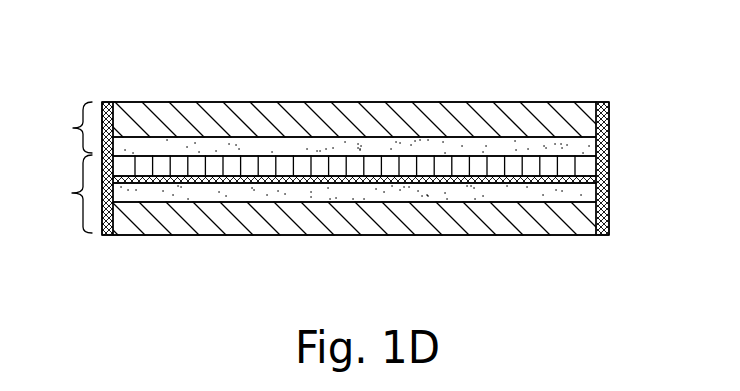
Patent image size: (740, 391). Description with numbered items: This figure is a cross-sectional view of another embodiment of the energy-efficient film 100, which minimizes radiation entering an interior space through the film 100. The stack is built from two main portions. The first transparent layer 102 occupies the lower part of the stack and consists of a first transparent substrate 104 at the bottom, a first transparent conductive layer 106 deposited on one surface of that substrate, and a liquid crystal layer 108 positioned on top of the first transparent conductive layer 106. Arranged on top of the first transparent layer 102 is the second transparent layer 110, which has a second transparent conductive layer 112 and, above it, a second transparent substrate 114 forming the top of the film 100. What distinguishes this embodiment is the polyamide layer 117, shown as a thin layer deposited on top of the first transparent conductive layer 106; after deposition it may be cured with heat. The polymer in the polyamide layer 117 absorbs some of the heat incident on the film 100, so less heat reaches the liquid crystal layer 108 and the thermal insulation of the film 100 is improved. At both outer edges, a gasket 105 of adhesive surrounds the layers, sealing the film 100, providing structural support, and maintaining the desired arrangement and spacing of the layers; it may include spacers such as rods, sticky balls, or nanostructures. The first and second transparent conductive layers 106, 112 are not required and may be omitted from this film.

The energy-efficient film 100 is at (490, 46).
The first transparent layer 102 is at (59, 194).
The first transparent substrate 104 is at (597, 231).
The gasket 105 is at (103, 102).
The first transparent conductive layer 106 is at (585, 197).
The liquid crystal layer 108 is at (586, 170).
The second transparent layer 110 is at (60, 127).
The second transparent conductive layer 112 is at (594, 145).
The second transparent substrate 114 is at (592, 127).
The polyamide layer 117 is at (538, 177).